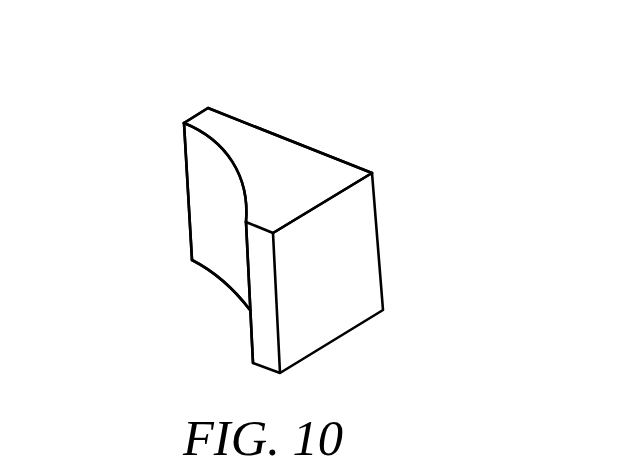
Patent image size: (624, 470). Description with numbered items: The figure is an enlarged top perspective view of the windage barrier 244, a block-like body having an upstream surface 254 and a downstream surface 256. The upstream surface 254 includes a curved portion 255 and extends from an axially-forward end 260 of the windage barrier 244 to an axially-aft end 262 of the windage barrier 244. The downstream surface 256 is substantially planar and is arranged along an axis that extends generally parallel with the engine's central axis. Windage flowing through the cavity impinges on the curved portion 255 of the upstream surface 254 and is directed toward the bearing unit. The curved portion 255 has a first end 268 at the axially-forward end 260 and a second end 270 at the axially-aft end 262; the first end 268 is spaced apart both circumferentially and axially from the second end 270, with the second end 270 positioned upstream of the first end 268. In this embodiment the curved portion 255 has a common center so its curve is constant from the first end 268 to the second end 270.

The windage barrier 244 is at (397, 100).
The upstream surface 254 is at (208, 203).
The curved portion 255 is at (237, 223).
The downstream surface 256 is at (282, 137).
The axially-forward end 260 is at (184, 122).
The axially-aft end 262 is at (353, 188).
The first end 268 is at (185, 175).
The second end 270 is at (251, 332).